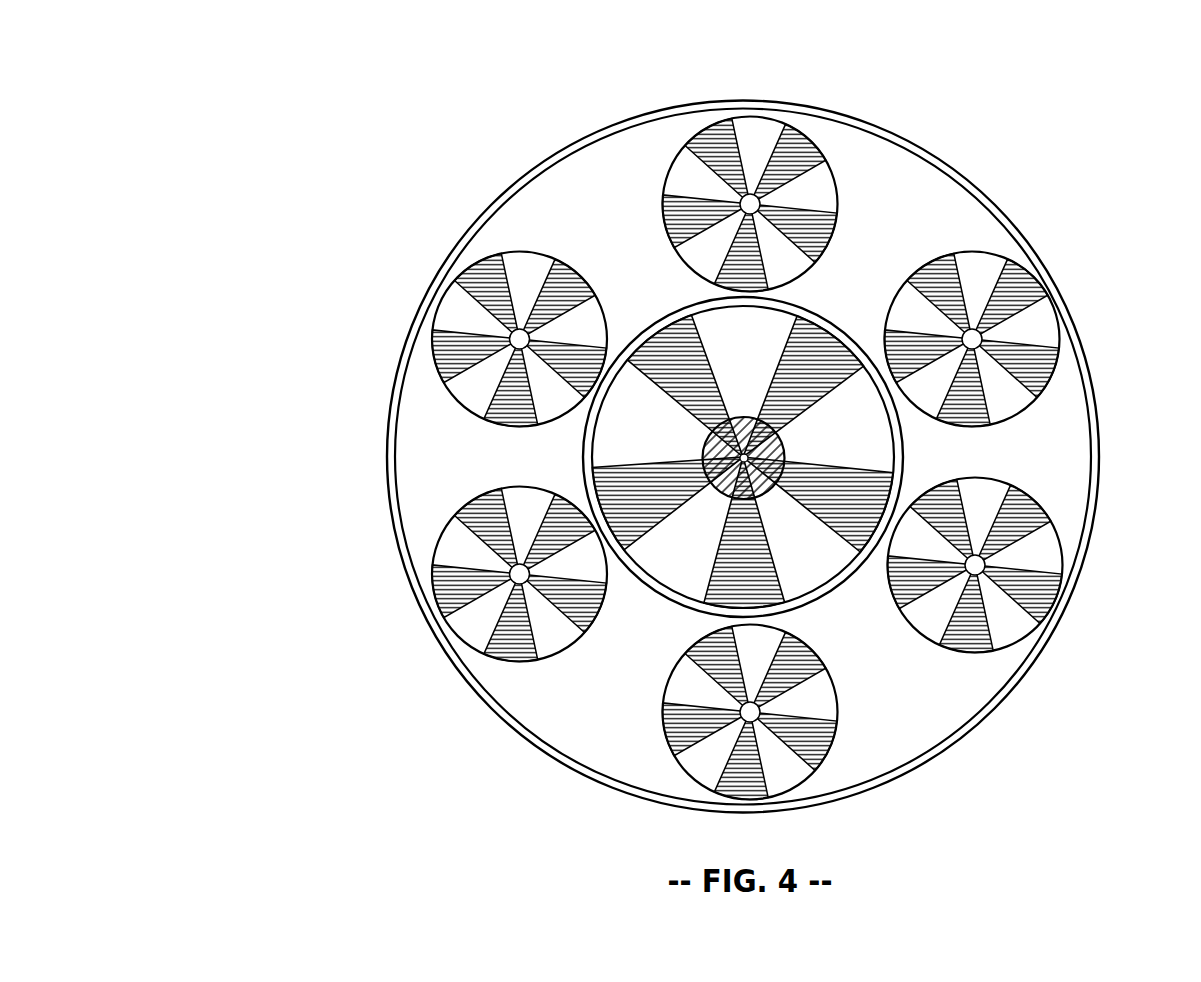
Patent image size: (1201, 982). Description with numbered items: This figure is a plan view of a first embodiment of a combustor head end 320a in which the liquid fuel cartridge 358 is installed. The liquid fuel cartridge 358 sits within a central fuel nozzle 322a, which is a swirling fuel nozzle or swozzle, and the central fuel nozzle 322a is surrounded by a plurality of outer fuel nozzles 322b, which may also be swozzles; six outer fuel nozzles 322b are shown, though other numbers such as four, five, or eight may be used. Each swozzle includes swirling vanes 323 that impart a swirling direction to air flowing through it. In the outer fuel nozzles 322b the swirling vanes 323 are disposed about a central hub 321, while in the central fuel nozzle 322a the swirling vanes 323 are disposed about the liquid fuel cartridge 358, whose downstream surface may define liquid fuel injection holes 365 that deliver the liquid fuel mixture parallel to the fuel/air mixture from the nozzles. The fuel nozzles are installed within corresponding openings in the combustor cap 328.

The combustor head end 320a is at (354, 155).
The central hub 321 is at (695, 162).
The central fuel nozzle 322a is at (834, 600).
The outer fuel nozzles 322b is at (840, 152).
The swirling vanes 323 is at (787, 165).
The combustor cap 328 is at (427, 392).
The liquid fuel cartridge 358 is at (698, 461).
The liquid fuel injection holes 365 is at (746, 458).